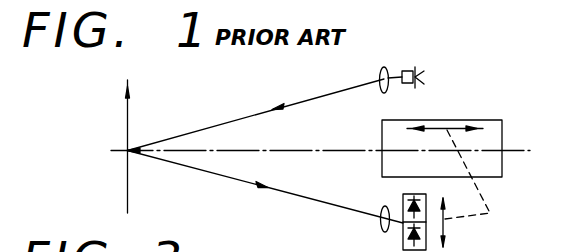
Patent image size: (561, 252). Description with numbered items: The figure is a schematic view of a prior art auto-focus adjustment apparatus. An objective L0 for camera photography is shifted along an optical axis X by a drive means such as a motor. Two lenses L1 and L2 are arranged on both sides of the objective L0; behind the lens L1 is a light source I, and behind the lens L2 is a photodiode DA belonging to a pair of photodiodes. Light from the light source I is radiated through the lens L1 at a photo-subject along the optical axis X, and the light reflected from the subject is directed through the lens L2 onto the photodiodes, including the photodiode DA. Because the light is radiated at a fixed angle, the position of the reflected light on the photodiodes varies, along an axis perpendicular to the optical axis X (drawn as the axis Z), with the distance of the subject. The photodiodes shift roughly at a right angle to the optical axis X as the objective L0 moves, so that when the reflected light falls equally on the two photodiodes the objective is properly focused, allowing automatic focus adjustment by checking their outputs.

The lens L1 is at (380, 69).
The light source I is at (409, 69).
The objective L0 is at (453, 120).
The photodiode DA is at (403, 196).
The lens L2 is at (381, 230).
The optical axis X is at (276, 150).
The Z axis Z is at (128, 118).